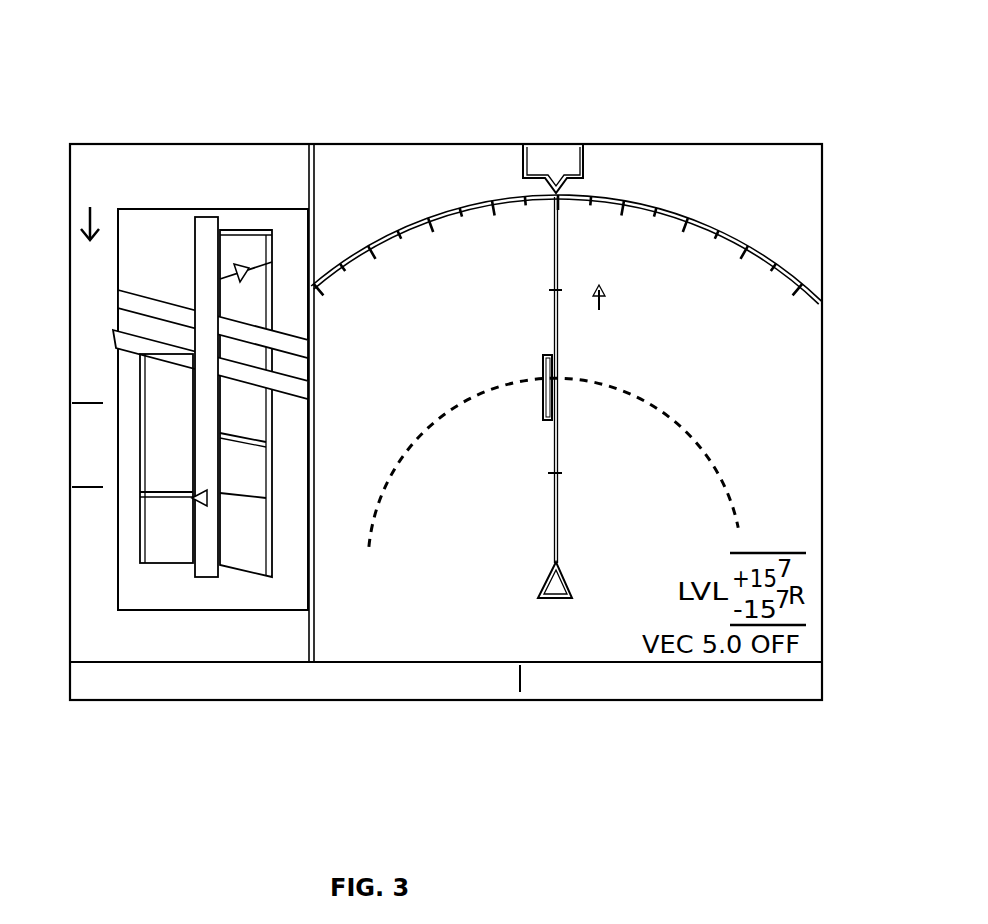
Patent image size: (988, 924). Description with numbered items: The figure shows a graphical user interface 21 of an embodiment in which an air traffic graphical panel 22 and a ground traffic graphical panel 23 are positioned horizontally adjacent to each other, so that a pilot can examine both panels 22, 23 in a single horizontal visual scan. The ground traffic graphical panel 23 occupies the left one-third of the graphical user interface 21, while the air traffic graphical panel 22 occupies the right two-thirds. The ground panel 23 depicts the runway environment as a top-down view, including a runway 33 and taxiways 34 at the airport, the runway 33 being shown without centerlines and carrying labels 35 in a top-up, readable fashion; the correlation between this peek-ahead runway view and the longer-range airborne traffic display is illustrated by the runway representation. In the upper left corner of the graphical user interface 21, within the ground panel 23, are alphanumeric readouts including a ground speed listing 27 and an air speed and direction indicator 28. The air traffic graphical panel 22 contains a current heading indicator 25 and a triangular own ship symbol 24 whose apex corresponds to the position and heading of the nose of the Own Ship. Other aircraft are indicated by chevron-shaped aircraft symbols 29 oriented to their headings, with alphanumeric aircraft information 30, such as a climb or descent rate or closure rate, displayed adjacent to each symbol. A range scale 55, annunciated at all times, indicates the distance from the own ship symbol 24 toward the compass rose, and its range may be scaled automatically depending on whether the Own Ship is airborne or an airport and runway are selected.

The graphical user interface 21 is at (426, 88).
The air traffic graphical panel 22 is at (637, 143).
The ground traffic graphical panel 23 is at (187, 143).
The own ship symbol 24 is at (565, 600).
The current heading indicator 25 is at (533, 143).
The ground speed readout 27 is at (71, 157).
The air speed and direction indicator 28 is at (72, 188).
The aircraft symbol 29 is at (244, 272).
The alphanumeric aircraft information 30 is at (608, 269).
The runway 33 is at (212, 405).
The taxiway 34 is at (154, 490).
The runway label 35 is at (233, 594).
The range scale 55 is at (457, 405).